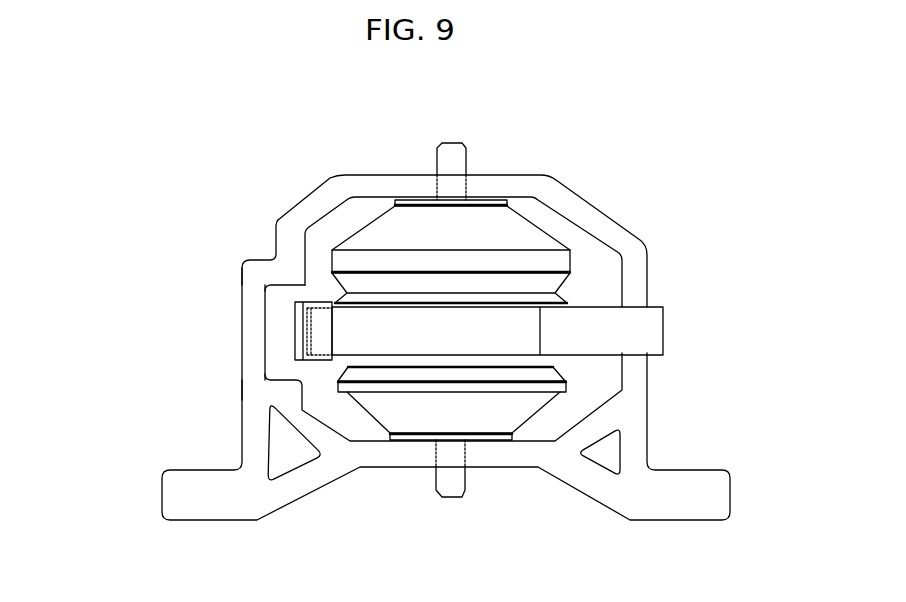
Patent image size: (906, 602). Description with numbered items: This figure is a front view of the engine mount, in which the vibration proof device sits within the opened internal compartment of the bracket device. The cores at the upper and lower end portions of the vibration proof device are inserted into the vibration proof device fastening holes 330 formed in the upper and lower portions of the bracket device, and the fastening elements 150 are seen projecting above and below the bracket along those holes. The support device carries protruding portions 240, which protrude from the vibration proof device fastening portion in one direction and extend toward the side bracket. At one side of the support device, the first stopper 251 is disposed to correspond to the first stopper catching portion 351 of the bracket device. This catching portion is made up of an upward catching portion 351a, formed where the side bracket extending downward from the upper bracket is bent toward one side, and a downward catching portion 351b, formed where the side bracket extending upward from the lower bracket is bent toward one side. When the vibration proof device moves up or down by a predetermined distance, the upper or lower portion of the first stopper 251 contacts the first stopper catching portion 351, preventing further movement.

The fastening bolt 150 is at (453, 157).
The protruding portion 240 is at (647, 330).
The first stopper 251 is at (323, 323).
The vibration proof device fastening hole 330 is at (455, 187).
The first stopper catching portion 351 is at (100, 282).
The upward catching portion 351a is at (288, 275).
The downward catching portion 351b is at (288, 392).